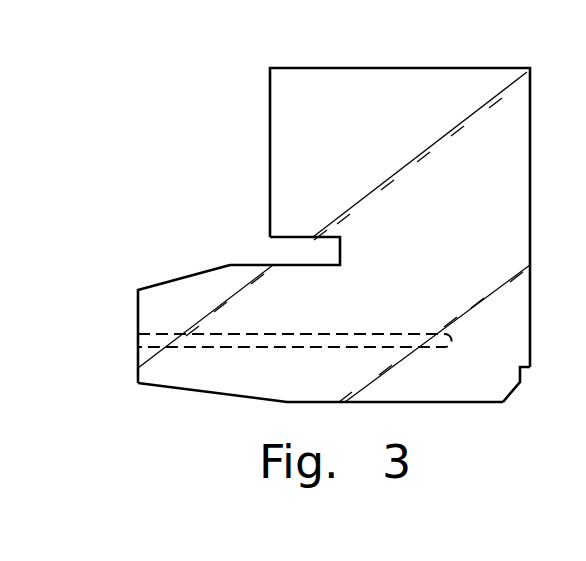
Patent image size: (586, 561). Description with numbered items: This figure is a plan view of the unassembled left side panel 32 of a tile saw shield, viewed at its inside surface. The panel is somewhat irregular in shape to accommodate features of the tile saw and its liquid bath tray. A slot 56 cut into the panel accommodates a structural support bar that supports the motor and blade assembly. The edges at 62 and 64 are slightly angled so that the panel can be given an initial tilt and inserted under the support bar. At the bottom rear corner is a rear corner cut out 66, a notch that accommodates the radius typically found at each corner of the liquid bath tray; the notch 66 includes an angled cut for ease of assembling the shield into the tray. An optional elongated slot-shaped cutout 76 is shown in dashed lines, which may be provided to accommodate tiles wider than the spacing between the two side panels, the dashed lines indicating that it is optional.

The left side panel 32 is at (462, 203).
The slot 56 is at (298, 252).
The angled edge 62 is at (173, 278).
The angled edge 64 is at (178, 393).
The rear corner cut out 66 is at (531, 386).
The elongated slot-shaped cutout 76 is at (372, 330).